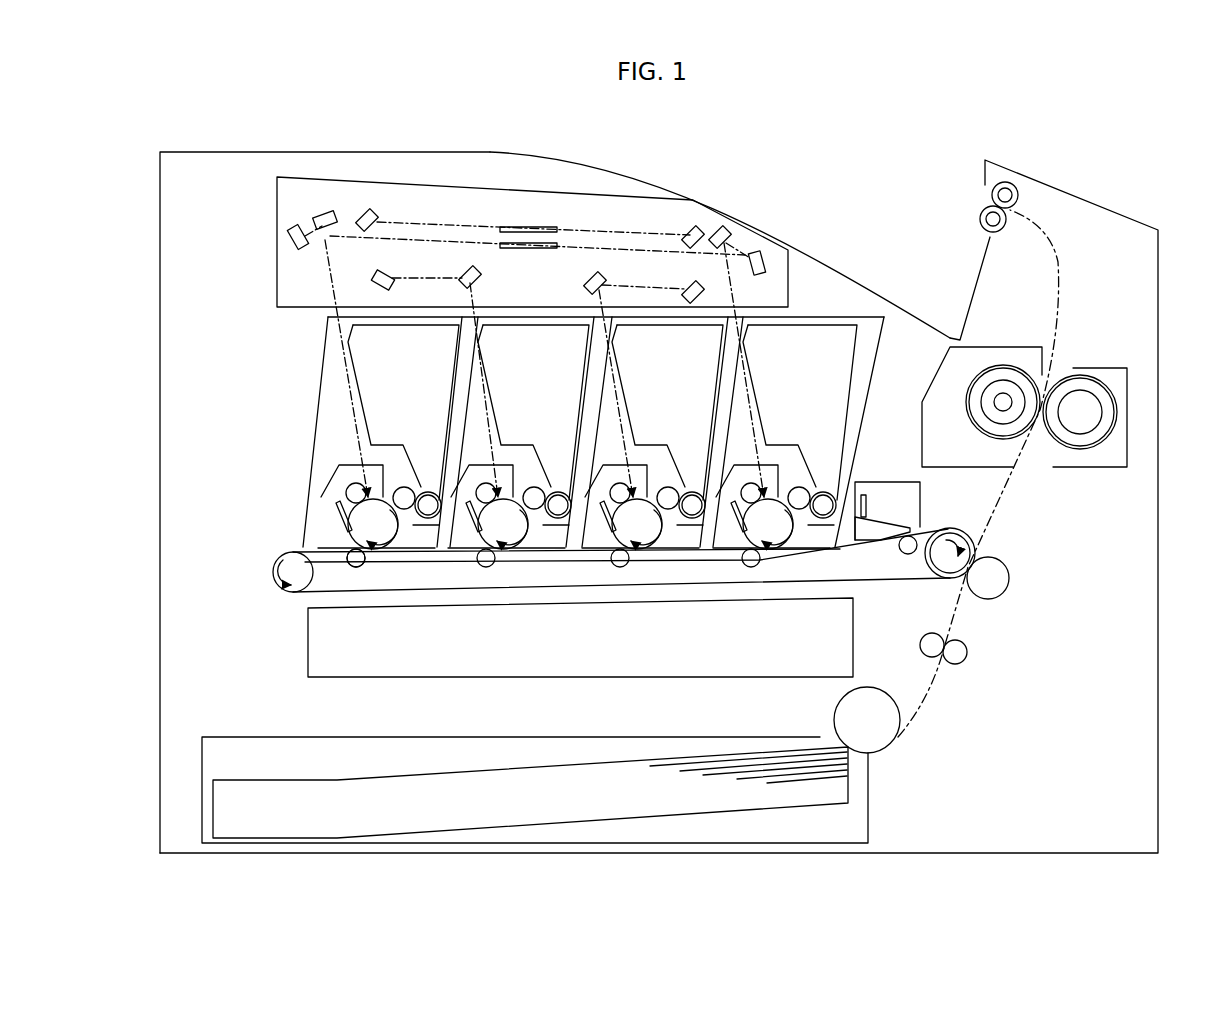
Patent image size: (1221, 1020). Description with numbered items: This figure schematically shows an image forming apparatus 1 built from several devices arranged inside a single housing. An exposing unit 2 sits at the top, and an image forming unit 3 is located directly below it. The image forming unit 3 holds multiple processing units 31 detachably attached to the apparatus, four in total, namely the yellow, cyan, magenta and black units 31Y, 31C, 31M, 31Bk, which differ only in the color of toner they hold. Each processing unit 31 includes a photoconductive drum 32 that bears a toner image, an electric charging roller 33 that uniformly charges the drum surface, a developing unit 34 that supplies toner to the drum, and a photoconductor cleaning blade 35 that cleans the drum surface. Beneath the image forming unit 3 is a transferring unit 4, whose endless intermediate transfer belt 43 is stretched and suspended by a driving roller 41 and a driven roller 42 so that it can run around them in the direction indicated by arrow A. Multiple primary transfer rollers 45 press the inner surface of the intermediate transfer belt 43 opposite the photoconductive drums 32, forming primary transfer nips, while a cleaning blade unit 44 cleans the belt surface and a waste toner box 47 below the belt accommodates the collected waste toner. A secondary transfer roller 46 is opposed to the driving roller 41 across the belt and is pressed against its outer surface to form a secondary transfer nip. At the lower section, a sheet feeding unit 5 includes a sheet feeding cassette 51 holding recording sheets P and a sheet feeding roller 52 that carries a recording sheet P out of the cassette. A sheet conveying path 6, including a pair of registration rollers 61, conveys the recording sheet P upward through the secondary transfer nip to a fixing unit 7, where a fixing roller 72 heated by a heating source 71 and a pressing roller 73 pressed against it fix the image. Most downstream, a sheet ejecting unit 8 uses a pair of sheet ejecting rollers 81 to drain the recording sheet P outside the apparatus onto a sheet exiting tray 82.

The image forming apparatus 1 is at (160, 460).
The exposing unit 2 is at (277, 238).
The image forming unit 3 is at (283, 415).
The transferring unit 4 is at (612, 570).
The sheet feeding unit 5 is at (544, 783).
The sheet conveying path 6 is at (1062, 262).
The fixing unit 7 is at (1058, 386).
The sheet ejecting unit 8 is at (956, 187).
The processing units 31 is at (610, 349).
The black processing unit 31Bk is at (414, 317).
The magenta processing unit 31M is at (570, 317).
The cyan processing unit 31C is at (667, 317).
The yellow processing unit 31Y is at (802, 384).
The photoconductive drum 32 is at (796, 540).
The electric charging roller 33 is at (748, 488).
The developing unit 34 is at (847, 362).
The photoconductor cleaning blade 35 is at (733, 500).
The driving roller 41 is at (950, 528).
The driven roller 42 is at (299, 590).
The intermediate transfer belt 43 is at (415, 592).
The cleaning blade unit 44 is at (891, 480).
The primary transfer rollers 45 is at (355, 567).
The secondary transfer roller 46 is at (1010, 578).
The waste toner box 47 is at (581, 677).
The sheet feeding cassette 51 is at (320, 737).
The sheet feeding roller 52 is at (834, 718).
The registration rollers 61 is at (945, 638).
The heating source 71 is at (1003, 393).
The fixing roller 72 is at (970, 418).
The pressing roller 73 is at (1078, 374).
The sheet ejecting rollers 81 is at (992, 196).
The sheet exiting tray 82 is at (767, 212).
The belt moving direction A is at (689, 611).
The recording sheet P is at (613, 803).